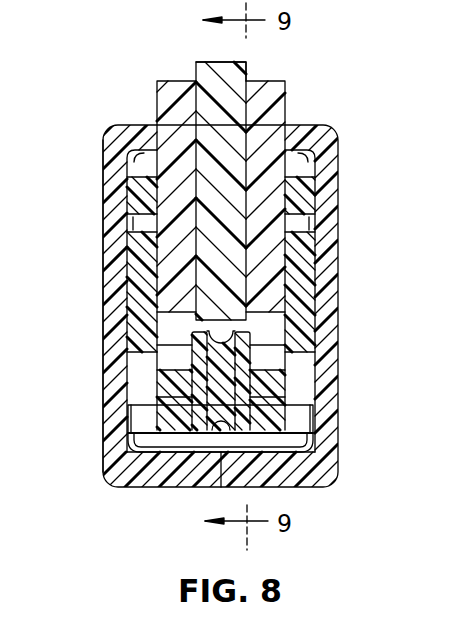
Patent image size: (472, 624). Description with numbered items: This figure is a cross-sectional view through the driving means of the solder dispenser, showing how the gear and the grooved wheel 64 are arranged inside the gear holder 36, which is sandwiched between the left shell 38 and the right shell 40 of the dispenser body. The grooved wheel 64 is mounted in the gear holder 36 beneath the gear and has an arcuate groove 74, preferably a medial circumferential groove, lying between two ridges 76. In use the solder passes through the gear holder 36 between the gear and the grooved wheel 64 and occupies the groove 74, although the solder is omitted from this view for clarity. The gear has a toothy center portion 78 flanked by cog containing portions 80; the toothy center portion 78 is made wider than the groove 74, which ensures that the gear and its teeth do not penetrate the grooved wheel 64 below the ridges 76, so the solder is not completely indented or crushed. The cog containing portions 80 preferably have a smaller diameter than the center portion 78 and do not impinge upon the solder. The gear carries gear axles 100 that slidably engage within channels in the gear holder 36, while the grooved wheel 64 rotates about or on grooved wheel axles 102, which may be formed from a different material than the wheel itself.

The gear holder 36 is at (223, 88).
The left shell 38 is at (338, 270).
The right shell 40 is at (103, 270).
The grooved wheel 64 is at (233, 400).
The arcuate groove 74 is at (222, 425).
The ridges 76 is at (200, 338).
The toothy center portion 78 is at (247, 72).
The cog containing portions 80 is at (157, 95).
The gear axles 100 is at (135, 197).
The grooved wheel axles 102 is at (170, 378).